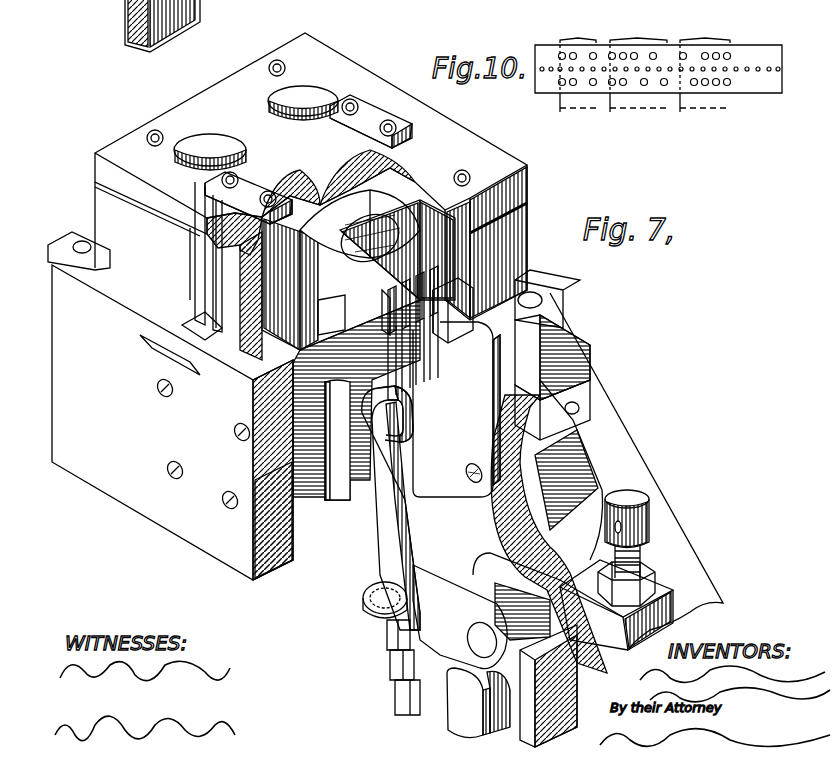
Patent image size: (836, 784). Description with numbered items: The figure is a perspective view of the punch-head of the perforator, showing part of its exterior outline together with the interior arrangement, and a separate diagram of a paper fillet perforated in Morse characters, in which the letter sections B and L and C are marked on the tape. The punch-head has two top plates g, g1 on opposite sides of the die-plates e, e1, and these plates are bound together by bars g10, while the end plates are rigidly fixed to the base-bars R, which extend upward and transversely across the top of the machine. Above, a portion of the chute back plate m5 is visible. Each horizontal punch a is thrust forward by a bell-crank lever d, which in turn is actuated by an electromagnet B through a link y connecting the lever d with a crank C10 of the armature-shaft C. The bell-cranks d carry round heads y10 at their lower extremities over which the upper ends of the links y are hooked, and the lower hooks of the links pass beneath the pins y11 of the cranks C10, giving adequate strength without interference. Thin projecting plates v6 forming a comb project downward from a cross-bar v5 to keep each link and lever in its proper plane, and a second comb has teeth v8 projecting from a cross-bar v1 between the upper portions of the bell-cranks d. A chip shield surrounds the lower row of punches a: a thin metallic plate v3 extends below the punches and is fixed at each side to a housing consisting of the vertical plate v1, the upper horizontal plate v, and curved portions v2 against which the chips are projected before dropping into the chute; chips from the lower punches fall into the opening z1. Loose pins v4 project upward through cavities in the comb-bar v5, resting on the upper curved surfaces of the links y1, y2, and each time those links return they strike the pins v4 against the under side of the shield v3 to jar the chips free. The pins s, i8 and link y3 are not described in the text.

In FIG. 7, the back plate m5 is at (125, 22).
In FIG. 7, the top plate g is at (311, 134).
In FIG. 7, the top plate g1 is at (484, 165).
In FIG. 7, the bars g10 is at (222, 186).
In FIG. 7, the upper horizontal plate v is at (360, 230).
In FIG. 7, the vertical plate v1 is at (440, 210).
In FIG. 7, the curved portions v2 is at (262, 218).
In FIG. 7, the thin metallic plate v3 is at (333, 310).
In FIG. 7, the loose pins v4 is at (300, 205).
In FIG. 7, the cross-bar v5 is at (345, 345).
In FIG. 7, the thin projecting plates v6 is at (430, 400).
In FIG. 7, the teeth v8 is at (592, 392).
In FIG. 7, the die-plate e is at (193, 282).
In FIG. 7, the die-plate e1 is at (214, 292).
In FIG. 7, the base-bars R is at (665, 418).
In FIG. 7, the block i8 is at (530, 285).
In FIG. 7, the punches a is at (453, 324).
In FIG. 7, the lever d is at (456, 409).
In FIG. 7, the pivot hole s is at (470, 480).
In FIG. 7, the link y is at (376, 548).
In FIG. 7, the round heads y10 is at (414, 421).
In FIG. 7, the pins y11 is at (363, 598).
In FIG. 7, the link y1 is at (387, 636).
In FIG. 7, the link y2 is at (390, 672).
In FIG. 7, the lever foot y3 is at (395, 700).
In FIG. 7, the armature-shaft C is at (452, 640).
In FIG. 10, the armature-shaft C is at (578, 30).
In FIG. 7, the cranks C10 is at (478, 636).
In FIG. 7, the opening z1 is at (318, 540).
In FIG. 10, the strip section L is at (638, 30).
In FIG. 10, the electromagnet B is at (705, 30).